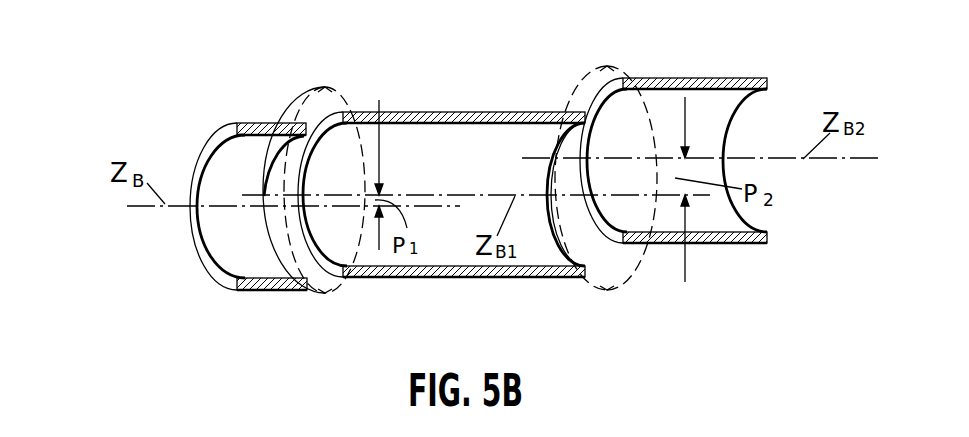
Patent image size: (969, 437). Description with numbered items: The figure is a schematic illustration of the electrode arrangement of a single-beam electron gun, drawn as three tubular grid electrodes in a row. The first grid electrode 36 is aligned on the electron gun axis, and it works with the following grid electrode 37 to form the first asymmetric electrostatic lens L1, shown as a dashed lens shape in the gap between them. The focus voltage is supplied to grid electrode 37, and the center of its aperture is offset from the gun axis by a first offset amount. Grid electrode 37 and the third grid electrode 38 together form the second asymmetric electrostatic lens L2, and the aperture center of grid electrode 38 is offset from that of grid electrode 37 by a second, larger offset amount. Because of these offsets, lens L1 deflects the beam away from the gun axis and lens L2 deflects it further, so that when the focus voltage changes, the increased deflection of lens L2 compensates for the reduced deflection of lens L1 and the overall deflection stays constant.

The grid electrode 36 is at (270, 290).
The grid electrode 37 is at (418, 110).
The grid electrode 38 is at (713, 245).
The first asymmetric electrostatic lens L1 is at (320, 88).
The second asymmetric electrostatic lens L2 is at (617, 72).